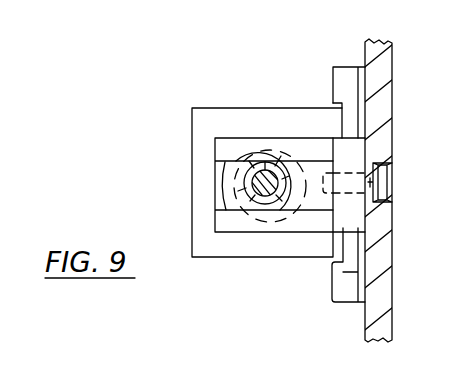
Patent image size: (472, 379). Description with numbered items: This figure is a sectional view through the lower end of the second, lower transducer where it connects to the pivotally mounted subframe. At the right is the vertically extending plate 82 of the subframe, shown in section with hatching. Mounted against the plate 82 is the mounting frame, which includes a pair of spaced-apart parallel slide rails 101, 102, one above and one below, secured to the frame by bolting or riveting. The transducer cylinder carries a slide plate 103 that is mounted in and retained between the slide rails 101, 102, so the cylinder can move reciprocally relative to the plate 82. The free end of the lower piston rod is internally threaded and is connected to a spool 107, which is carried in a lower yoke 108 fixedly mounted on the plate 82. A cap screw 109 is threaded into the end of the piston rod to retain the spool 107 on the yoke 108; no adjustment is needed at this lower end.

The vertically extending plate 82 is at (387, 78).
The slide rail 101 is at (333, 76).
The slide rail 102 is at (332, 296).
The slide plate 103 is at (342, 115).
The spool 107 is at (247, 190).
The lower yoke 108 is at (215, 147).
The cap screw 109 is at (246, 178).